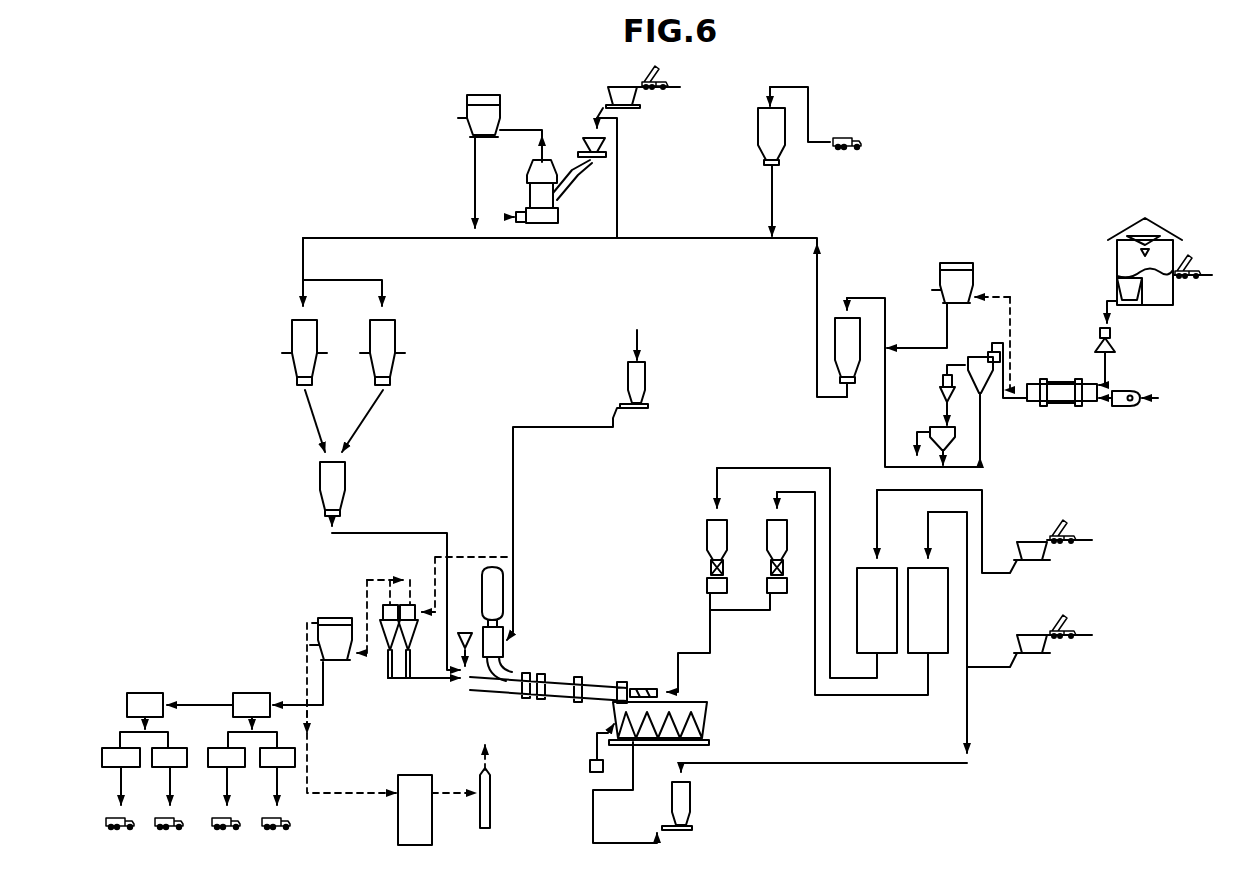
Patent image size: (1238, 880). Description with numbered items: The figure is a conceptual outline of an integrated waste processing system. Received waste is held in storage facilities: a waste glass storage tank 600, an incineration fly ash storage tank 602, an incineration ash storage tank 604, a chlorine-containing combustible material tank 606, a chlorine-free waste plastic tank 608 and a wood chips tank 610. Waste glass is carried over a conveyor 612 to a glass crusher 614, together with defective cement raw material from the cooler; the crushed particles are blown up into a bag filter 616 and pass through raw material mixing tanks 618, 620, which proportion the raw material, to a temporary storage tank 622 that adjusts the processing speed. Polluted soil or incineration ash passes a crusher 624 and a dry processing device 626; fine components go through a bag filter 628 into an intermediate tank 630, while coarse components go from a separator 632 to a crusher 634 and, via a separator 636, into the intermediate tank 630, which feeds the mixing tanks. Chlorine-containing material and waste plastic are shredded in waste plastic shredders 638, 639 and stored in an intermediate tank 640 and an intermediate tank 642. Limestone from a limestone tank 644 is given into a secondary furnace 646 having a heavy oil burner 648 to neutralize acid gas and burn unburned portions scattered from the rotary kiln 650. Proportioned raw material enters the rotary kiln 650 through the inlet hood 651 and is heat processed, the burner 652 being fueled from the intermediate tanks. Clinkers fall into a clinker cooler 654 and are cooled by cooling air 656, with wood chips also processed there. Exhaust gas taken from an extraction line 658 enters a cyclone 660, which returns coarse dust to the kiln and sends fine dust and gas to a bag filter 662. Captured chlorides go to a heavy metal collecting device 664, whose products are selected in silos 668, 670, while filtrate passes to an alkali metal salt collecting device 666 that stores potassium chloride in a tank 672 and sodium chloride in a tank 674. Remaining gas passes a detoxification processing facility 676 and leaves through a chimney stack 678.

The waste glass storage tank 600 is at (620, 108).
The incineration fly ash storage tank 602 is at (760, 148).
The incineration ash storage tank 604 is at (1117, 288).
The chlorine-containing combustible material tank 606 is at (1040, 560).
The chlorine-free waste plastic tank 608 is at (1040, 655).
The wood chips tank 610 is at (692, 800).
The conveyor 612 is at (590, 137).
The glass crusher 614 is at (545, 223).
The bag filter 616 is at (467, 108).
The raw material mixing tank 618 is at (292, 333).
The raw material mixing tank 620 is at (395, 333).
The temporary storage tank 622 is at (320, 480).
The crusher 624 is at (1115, 345).
The dry processing device 626 is at (1060, 381).
The bag filter 628 is at (955, 263).
The intermediate tank 630 is at (835, 332).
The separator 632 is at (990, 398).
The crusher 634 is at (938, 395).
The separator 636 is at (960, 440).
The waste plastic shredder 638 is at (880, 655).
The waste plastic shredder 639 is at (940, 655).
The intermediate tank for chlorine-containing combustible material 640 is at (707, 538).
The intermediate tank for chlorine-free waste plastic 642 is at (767, 538).
The limestone tank 644 is at (647, 378).
The secondary furnace 646 is at (480, 565).
The heavy oil burner 648 is at (510, 645).
The rotary kiln 650 is at (576, 680).
The inlet hood 651 is at (506, 694).
The burner 652 is at (628, 688).
The clinker cooler 654 is at (695, 706).
The cooling air 656 is at (590, 755).
The extraction line 658 is at (433, 565).
The cyclone 660 is at (384, 645).
The bag filter 662 is at (334, 618).
The heavy metal collecting device 664 is at (255, 693).
The alkali metal salt collecting device 666 is at (140, 693).
The silo 668 is at (218, 748).
The silo 670 is at (297, 757).
The tank 672 is at (175, 748).
The tank 674 is at (112, 748).
The detoxification processing facility 676 is at (420, 775).
The chimney stack 678 is at (492, 796).